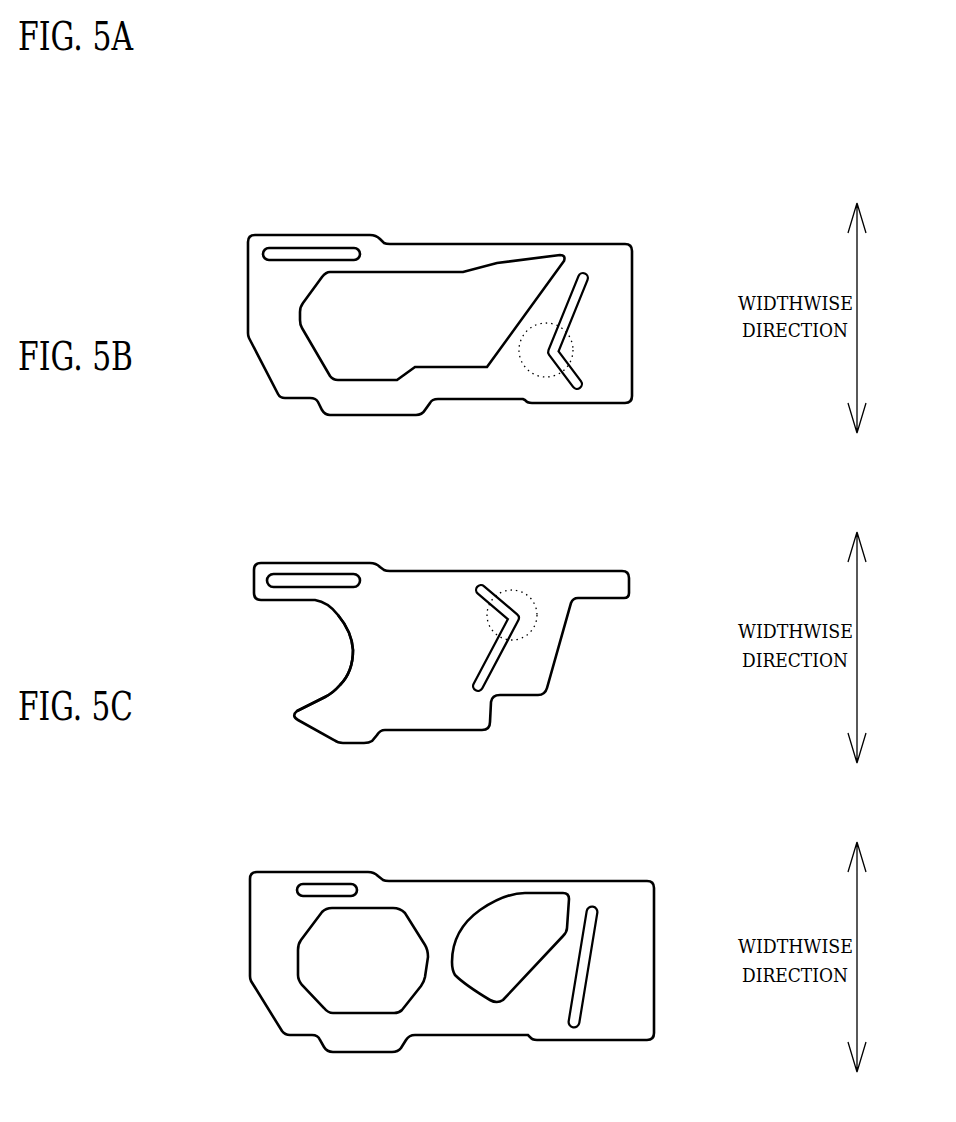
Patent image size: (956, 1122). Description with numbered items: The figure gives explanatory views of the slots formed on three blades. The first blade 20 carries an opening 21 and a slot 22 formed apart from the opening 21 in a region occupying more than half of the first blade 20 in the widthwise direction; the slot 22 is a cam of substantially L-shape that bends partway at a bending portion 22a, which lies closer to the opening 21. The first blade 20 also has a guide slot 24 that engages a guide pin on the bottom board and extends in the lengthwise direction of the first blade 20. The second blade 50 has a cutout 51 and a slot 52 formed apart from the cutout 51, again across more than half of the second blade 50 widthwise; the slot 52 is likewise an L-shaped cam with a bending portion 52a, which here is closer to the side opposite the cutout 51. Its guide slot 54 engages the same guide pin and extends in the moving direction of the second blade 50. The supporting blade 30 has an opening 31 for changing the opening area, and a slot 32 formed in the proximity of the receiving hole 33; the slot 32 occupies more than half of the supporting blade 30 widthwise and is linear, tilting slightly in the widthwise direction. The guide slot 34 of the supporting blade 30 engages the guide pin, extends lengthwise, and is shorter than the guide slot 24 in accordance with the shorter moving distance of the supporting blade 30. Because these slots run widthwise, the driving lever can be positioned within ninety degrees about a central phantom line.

In FIG. 5A, the first blade 20 is at (132, 243).
In FIG. 5A, the opening 21 is at (490, 264).
In FIG. 5A, the slot 22 is at (582, 287).
In FIG. 5A, the bending portion 22a is at (573, 350).
In FIG. 5A, the guide slot 24 is at (300, 250).
In FIG. 5B, the second blade 50 is at (123, 527).
In FIG. 5B, the cutout 51 is at (330, 687).
In FIG. 5B, the slot 52 is at (491, 664).
In FIG. 5B, the bending portion 52a is at (532, 634).
In FIG. 5B, the guide slot 54 is at (312, 580).
In FIG. 5C, the supporting blade 30 is at (142, 870).
In FIG. 5C, the opening 31 is at (310, 980).
In FIG. 5C, the slot 32 is at (580, 1003).
In FIG. 5C, the receiving hole 33 is at (465, 987).
In FIG. 5C, the guide slot 34 is at (314, 888).